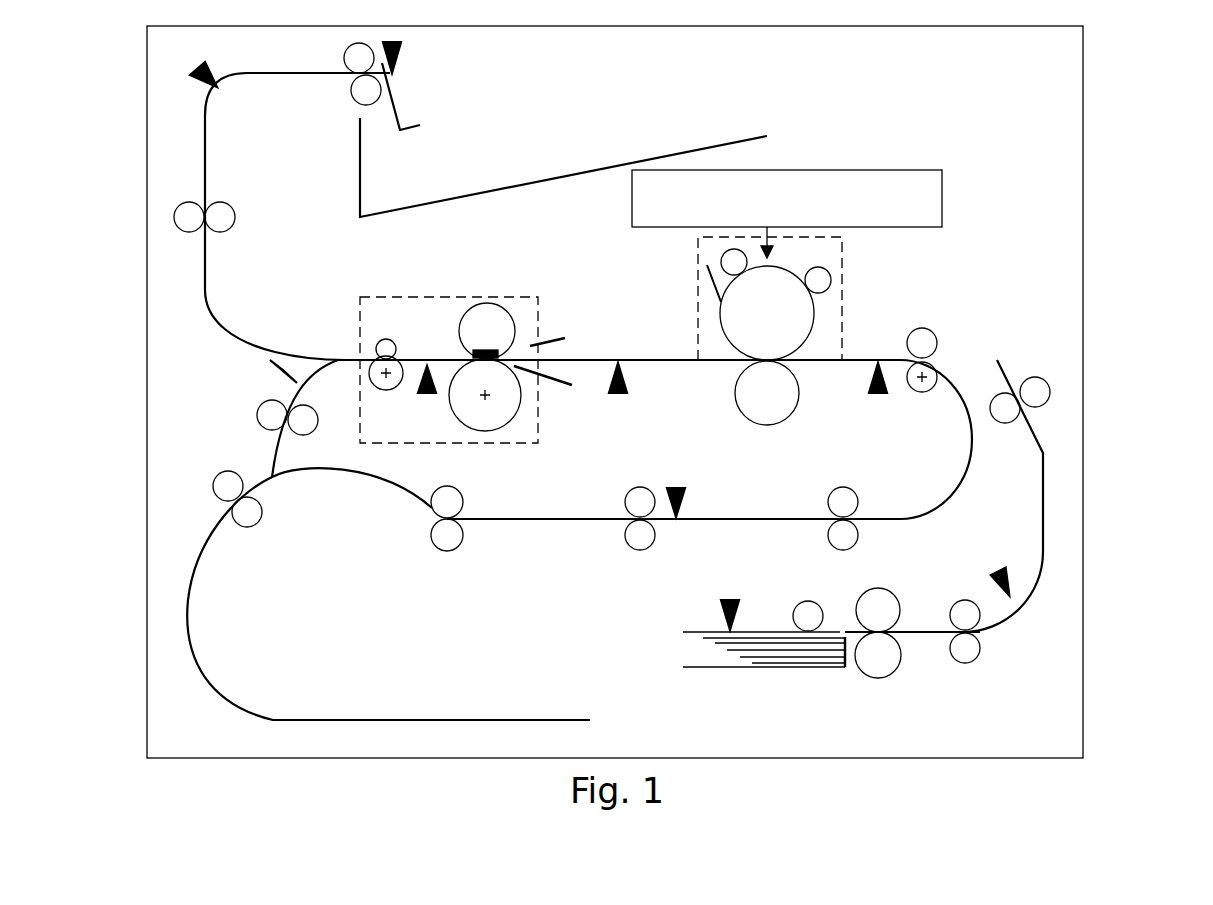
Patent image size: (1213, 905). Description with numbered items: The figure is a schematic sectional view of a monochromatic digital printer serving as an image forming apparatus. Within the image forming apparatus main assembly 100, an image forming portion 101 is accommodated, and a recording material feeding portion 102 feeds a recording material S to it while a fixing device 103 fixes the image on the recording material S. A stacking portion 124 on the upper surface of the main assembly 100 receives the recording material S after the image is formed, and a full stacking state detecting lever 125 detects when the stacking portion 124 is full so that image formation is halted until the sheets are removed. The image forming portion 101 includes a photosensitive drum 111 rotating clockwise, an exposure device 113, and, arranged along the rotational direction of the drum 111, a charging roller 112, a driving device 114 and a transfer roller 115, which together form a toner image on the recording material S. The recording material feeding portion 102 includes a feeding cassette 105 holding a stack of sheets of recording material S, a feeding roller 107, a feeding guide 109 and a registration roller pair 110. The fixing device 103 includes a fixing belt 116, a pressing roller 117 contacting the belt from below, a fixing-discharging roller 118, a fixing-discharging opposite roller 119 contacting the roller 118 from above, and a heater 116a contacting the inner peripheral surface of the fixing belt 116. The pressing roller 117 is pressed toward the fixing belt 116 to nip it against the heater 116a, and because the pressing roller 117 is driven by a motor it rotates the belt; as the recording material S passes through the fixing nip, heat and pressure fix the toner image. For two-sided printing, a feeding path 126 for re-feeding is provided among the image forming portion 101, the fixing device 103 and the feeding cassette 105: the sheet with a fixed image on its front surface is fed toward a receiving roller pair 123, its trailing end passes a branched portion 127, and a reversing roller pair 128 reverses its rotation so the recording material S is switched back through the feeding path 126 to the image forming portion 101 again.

The image forming apparatus main assembly 100 is at (1082, 100).
The image forming portion 101 is at (842, 256).
The recording material feeding portion 102 is at (1030, 578).
The fixing device 103 is at (440, 297).
The feeding cassette 105 is at (715, 667).
The feeding roller 107 is at (897, 593).
The feeding guide 109 is at (1043, 490).
The registration roller pair 110 is at (905, 395).
The photosensitive drum 111 is at (720, 332).
The charging roller 112 is at (720, 258).
The exposure device 113 is at (765, 200).
The driving device 114 is at (832, 287).
The transfer roller 115 is at (757, 427).
The fixing belt 116 is at (500, 305).
The heater 116a is at (490, 350).
The pressing roller 117 is at (505, 423).
The fixing-discharging roller 118 is at (393, 388).
The fixing-discharging opposite roller 119 is at (377, 342).
The receiving roller pair 123 is at (310, 430).
The stacking portion 124 is at (542, 180).
The full stacking state detecting lever 125 is at (392, 90).
The feeding path 126 is at (550, 519).
The branched portion 127 is at (260, 473).
The reversing roller pair 128 is at (255, 525).
The recording material S is at (760, 655).